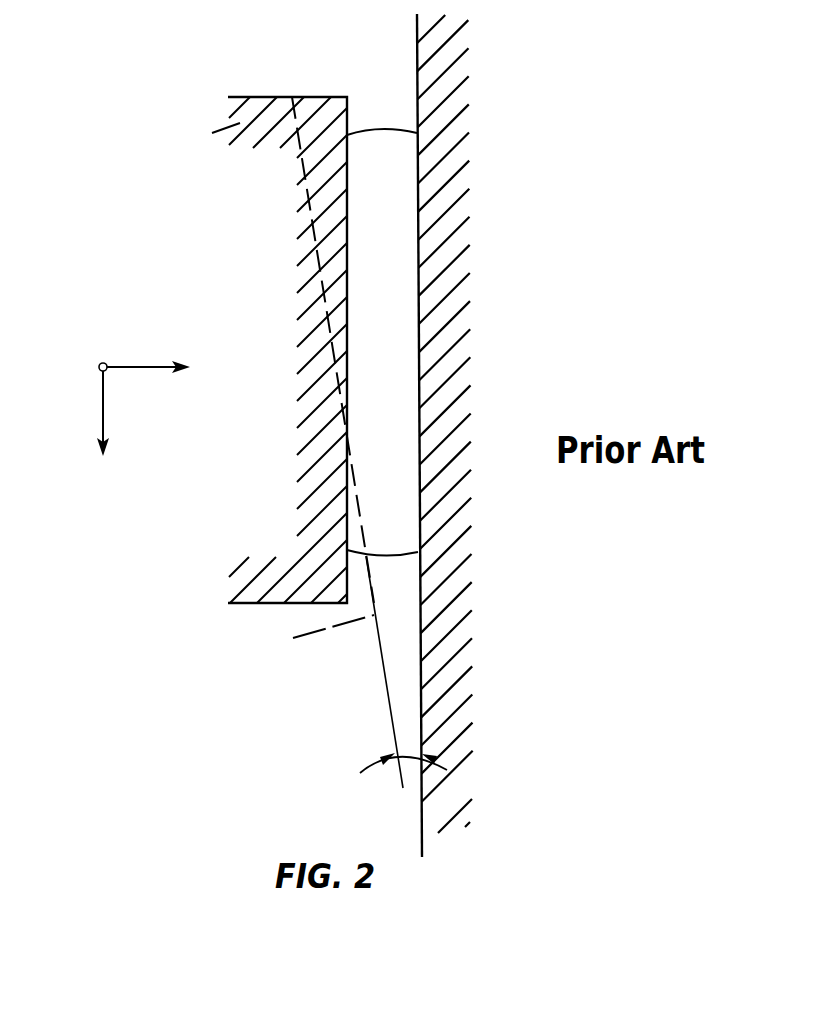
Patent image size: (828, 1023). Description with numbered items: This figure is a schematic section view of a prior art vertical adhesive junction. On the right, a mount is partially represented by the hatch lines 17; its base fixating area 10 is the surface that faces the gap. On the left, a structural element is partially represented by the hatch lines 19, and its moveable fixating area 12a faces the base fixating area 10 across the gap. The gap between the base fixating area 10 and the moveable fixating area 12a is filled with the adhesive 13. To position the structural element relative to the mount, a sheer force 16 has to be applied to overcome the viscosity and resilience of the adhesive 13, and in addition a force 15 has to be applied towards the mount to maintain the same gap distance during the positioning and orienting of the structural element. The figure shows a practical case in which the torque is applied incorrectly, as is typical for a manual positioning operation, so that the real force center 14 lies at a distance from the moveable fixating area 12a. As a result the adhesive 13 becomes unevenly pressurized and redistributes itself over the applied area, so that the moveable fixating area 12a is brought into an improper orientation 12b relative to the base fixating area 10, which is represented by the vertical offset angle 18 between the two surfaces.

The base fixating area 10 is at (420, 65).
The moveable fixating area 12a is at (347, 150).
The improper orientation 12b is at (310, 222).
The adhesive 13 is at (408, 195).
The real force center 14 is at (100, 364).
The force 15 is at (175, 372).
The sheer force 16 is at (103, 425).
The hatch lines 17 is at (470, 720).
The vertical offset angle 18 is at (446, 766).
The hatch lines 19 is at (308, 523).